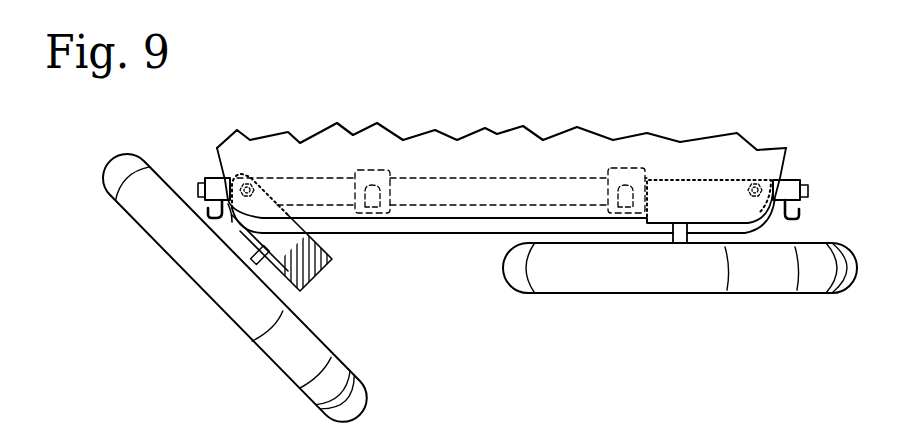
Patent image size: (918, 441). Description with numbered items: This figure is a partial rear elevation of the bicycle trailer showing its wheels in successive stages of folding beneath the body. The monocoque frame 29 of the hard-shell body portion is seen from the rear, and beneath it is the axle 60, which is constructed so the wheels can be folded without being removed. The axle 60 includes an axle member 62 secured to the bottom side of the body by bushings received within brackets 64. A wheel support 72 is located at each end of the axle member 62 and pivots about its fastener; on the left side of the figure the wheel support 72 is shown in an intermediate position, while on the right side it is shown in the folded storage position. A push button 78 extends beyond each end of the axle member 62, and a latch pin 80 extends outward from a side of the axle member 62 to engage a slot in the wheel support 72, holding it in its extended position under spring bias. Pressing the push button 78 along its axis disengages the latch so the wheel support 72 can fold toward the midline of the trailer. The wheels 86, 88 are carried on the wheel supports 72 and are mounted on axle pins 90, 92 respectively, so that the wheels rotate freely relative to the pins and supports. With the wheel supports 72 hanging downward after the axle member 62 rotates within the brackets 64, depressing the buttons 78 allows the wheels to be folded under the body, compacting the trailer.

The axle 60 is at (167, 145).
The monocoque frame 29 is at (325, 150).
The axle member 62 is at (490, 178).
The brackets 64 is at (373, 170).
The wheel support 72 is at (727, 177).
The push button 78 is at (807, 190).
The latch pin 80 is at (798, 212).
The wheel 86 is at (366, 411).
The wheel 88 is at (568, 294).
The axle pin 90 is at (286, 276).
The axle pin 92 is at (673, 235).